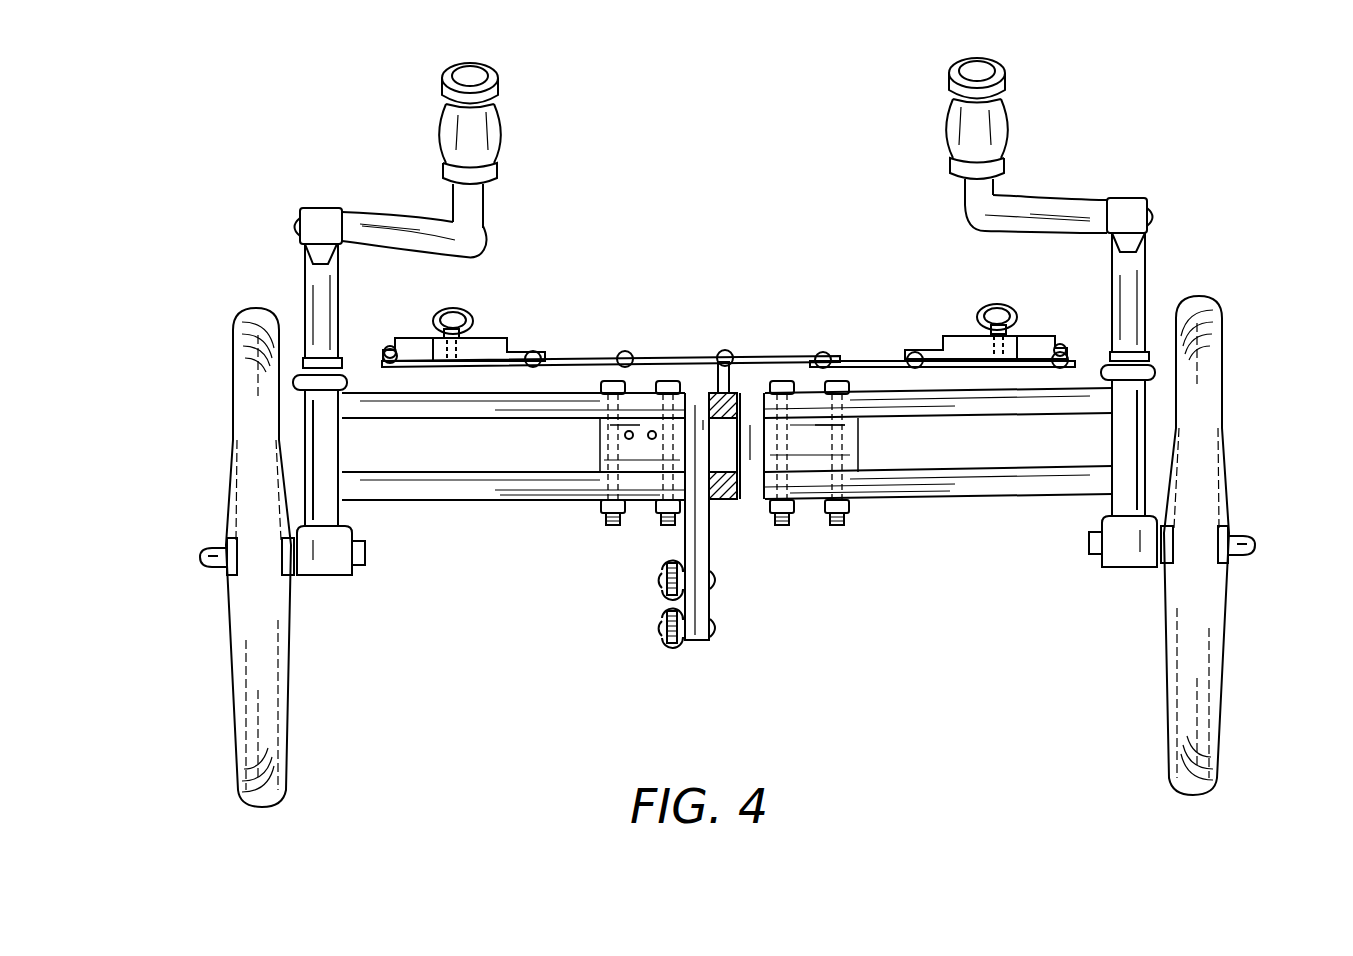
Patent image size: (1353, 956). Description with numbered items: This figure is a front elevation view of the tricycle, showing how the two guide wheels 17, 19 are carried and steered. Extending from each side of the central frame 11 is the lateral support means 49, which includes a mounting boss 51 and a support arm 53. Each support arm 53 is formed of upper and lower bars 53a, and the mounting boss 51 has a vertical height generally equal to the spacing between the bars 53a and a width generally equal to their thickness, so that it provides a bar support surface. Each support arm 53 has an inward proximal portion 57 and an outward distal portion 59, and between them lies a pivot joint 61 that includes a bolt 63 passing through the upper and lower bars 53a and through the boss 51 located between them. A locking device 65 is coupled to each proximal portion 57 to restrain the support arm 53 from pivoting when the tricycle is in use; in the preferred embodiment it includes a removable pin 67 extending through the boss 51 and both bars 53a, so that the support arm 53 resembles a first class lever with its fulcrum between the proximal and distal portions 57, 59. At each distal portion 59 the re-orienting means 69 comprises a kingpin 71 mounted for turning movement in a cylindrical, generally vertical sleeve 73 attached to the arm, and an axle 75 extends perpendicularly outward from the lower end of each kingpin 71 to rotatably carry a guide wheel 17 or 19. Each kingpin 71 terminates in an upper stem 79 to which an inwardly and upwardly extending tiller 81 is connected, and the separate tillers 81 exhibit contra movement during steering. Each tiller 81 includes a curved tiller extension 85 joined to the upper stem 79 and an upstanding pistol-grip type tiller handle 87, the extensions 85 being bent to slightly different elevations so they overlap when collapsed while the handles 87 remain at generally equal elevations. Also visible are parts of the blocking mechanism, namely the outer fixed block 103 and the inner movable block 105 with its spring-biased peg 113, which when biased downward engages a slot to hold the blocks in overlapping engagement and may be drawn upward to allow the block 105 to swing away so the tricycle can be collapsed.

The frame 11 is at (720, 500).
The guide wheel 17 is at (236, 340).
The guide wheel 19 is at (1224, 316).
The lateral support means 49 is at (490, 548).
The mounting boss 51 is at (597, 443).
The support arm 53 is at (425, 473).
The bars 53a is at (527, 420).
The proximal portion 57 is at (650, 505).
The distal portion 59 is at (362, 508).
The pivot joint 61 is at (602, 493).
The bolt 63 is at (610, 381).
The locking device 65 is at (680, 380).
The removable pin 67 is at (668, 527).
The re-orienting means 69 is at (352, 620).
The kingpin 71 is at (305, 290).
The sleeve 73 is at (310, 440).
The axle 75 is at (212, 568).
The upper stem 79 is at (320, 210).
The tiller 81 is at (532, 190).
The tiller extension 85 is at (393, 212).
The tiller handle 87 is at (498, 82).
The outer fixed block 103 is at (412, 340).
The inner movable block 105 is at (492, 340).
The spring-biased peg 113 is at (464, 316).